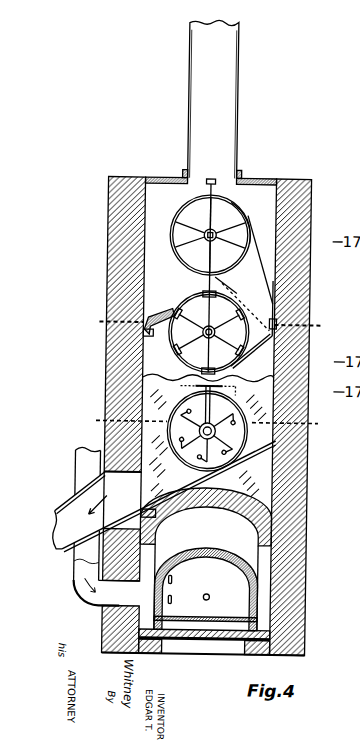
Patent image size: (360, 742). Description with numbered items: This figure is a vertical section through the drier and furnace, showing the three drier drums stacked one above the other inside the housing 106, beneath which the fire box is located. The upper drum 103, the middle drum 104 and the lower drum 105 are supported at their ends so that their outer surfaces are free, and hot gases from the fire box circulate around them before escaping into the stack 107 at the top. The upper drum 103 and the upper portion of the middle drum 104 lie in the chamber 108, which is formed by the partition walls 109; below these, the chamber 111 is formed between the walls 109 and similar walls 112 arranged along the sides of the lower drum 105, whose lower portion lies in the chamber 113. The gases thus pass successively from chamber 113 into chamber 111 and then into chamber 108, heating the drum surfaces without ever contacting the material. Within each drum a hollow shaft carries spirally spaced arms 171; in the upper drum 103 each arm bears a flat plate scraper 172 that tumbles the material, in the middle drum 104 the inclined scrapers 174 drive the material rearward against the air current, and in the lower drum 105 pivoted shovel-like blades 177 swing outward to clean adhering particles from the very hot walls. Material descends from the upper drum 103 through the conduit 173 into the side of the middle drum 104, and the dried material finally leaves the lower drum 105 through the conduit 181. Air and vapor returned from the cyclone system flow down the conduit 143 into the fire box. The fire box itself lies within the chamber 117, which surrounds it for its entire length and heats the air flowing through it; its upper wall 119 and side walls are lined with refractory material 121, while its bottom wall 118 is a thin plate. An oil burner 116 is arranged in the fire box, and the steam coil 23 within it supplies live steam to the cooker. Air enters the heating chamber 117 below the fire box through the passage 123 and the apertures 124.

The housing 106 is at (308, 291).
The stack 107 is at (229, 80).
The upper drum 103 is at (184, 200).
The arms 171 is at (210, 259).
The flat plate scraper 172 is at (230, 199).
The chamber 108 is at (176, 325).
The conduit 173 is at (254, 300).
The middle drum 104 is at (183, 304).
The scrapers 174 is at (212, 332).
The partition walls 109 is at (100, 323).
The chamber 111 is at (174, 373).
The lower drum 105 is at (183, 393).
The shovel-like blade 177 is at (240, 395).
The walls 112 is at (206, 422).
The conduit 181 is at (193, 491).
The chamber 113 is at (169, 496).
The conduit 143 is at (77, 471).
The chamber 117 is at (257, 548).
The upper wall 119 is at (222, 548).
The refractory material 121 is at (209, 553).
The oil burner 116 is at (212, 598).
The apertures 124 is at (200, 592).
The steam coil 23 is at (174, 601).
The bottom wall 118 is at (199, 621).
The passage 123 is at (232, 645).